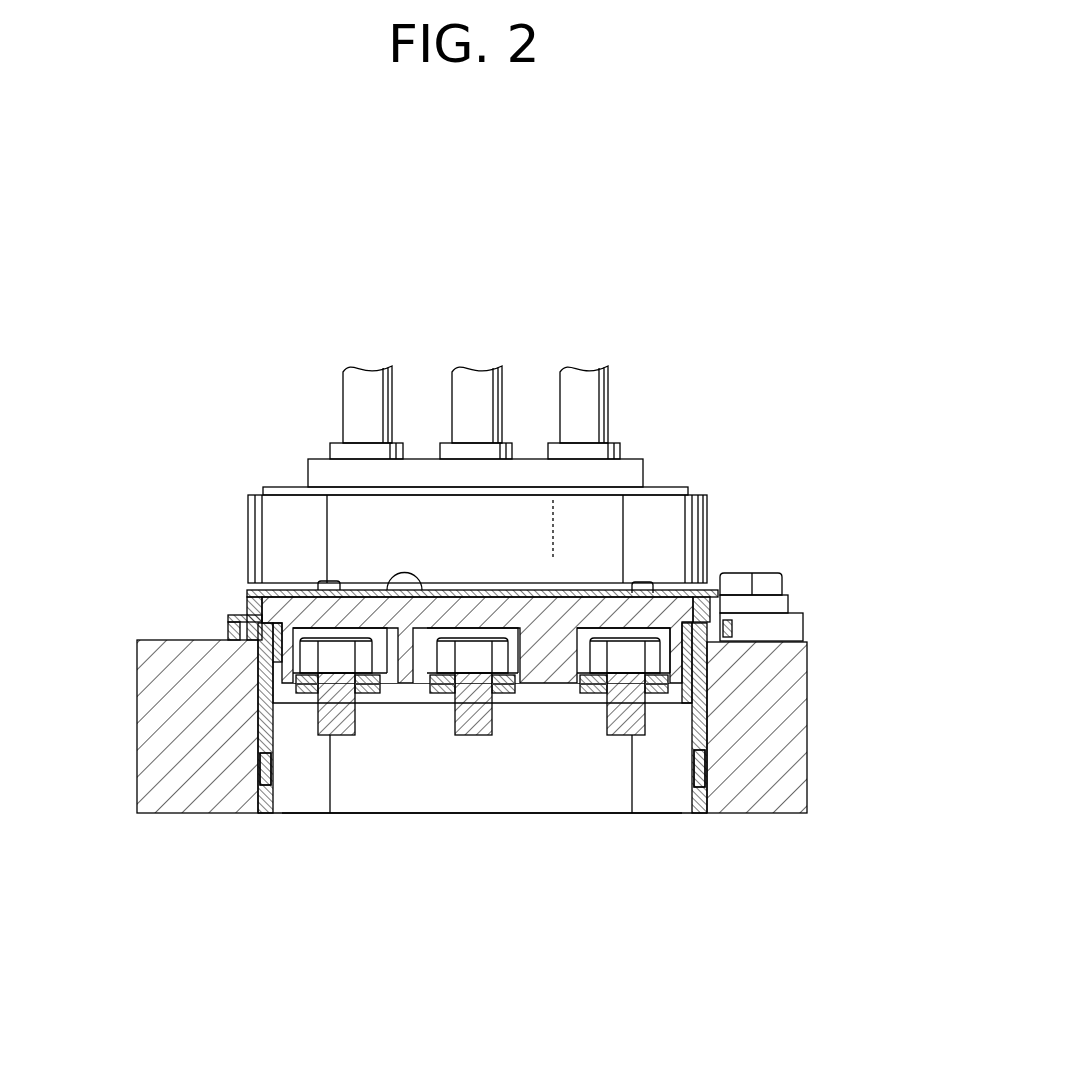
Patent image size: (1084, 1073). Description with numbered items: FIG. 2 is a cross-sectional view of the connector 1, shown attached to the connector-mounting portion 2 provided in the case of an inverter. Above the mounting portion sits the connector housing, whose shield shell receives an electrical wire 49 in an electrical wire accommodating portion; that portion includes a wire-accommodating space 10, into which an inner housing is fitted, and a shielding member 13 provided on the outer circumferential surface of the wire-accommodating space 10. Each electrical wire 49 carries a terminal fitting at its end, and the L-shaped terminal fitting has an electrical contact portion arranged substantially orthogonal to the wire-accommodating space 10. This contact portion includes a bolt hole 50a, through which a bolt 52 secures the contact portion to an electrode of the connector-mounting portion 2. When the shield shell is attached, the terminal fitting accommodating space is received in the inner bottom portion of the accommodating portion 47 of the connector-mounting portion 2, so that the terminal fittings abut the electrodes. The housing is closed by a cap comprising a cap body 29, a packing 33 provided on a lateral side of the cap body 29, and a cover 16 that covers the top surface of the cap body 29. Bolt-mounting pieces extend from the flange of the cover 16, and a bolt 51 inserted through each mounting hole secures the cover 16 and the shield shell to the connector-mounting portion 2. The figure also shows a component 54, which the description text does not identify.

The connector 1 is at (735, 320).
The connector-mounting portion 2 is at (807, 742).
The wire-accommodating space 10 is at (681, 489).
The shielding member 13 is at (275, 543).
The cover 16 is at (358, 590).
The cap body 29 is at (590, 618).
The packing 33 is at (277, 660).
The accommodating portion 47 is at (500, 768).
The electrical wire 49 is at (393, 388).
The bolt hole 50a is at (308, 652).
The bolt 51 is at (767, 572).
The bolt 52 is at (338, 736).
The washers 54 is at (305, 692).